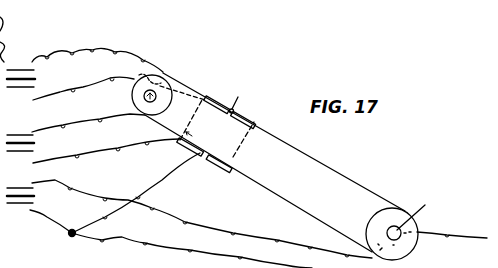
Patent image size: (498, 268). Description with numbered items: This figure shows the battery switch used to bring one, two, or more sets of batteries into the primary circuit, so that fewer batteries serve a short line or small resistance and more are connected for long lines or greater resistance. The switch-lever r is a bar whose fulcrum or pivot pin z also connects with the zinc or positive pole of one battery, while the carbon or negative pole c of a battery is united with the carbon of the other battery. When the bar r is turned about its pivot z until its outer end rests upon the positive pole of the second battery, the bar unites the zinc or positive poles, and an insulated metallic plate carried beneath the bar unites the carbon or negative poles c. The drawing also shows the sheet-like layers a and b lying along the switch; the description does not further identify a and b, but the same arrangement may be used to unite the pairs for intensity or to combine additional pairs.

The upper sheet a is at (97, 55).
The sheet / cross bar b is at (346, 197).
The carbon or negative pole c is at (162, 171).
The switch-lever r is at (275, 166).
The fulcrum or pivot pin z is at (221, 157).